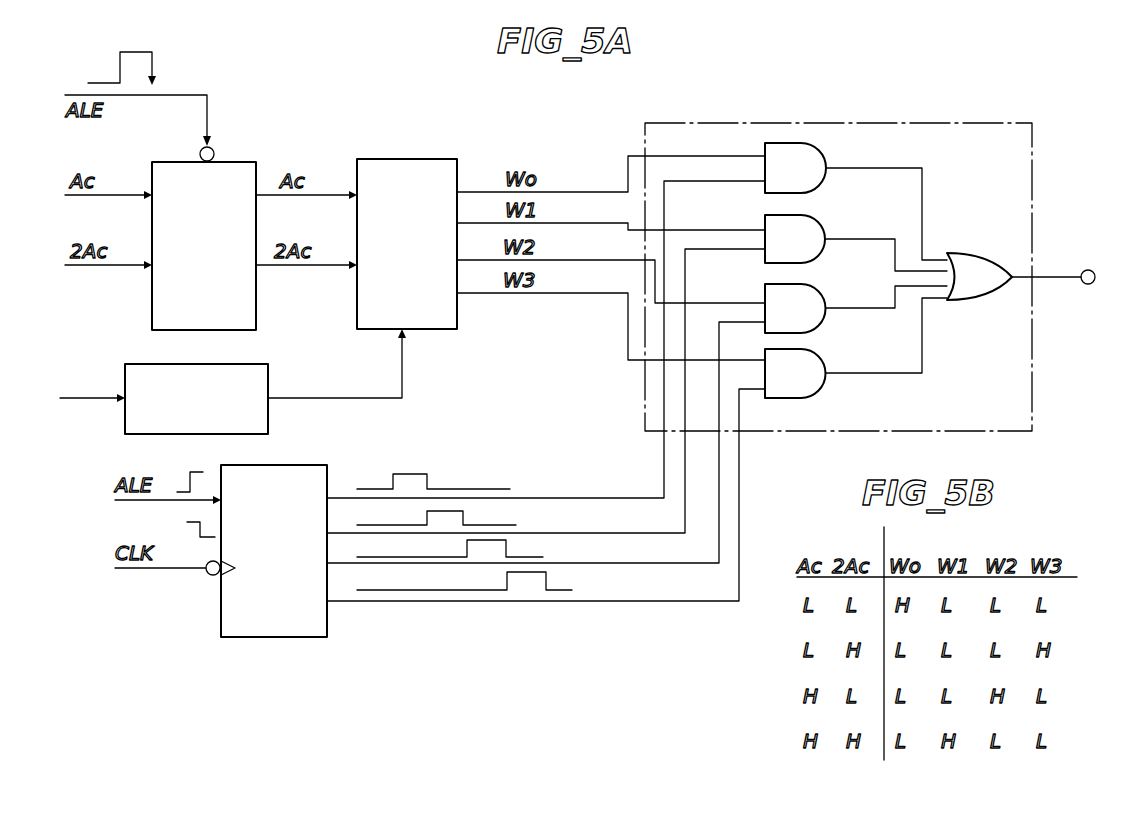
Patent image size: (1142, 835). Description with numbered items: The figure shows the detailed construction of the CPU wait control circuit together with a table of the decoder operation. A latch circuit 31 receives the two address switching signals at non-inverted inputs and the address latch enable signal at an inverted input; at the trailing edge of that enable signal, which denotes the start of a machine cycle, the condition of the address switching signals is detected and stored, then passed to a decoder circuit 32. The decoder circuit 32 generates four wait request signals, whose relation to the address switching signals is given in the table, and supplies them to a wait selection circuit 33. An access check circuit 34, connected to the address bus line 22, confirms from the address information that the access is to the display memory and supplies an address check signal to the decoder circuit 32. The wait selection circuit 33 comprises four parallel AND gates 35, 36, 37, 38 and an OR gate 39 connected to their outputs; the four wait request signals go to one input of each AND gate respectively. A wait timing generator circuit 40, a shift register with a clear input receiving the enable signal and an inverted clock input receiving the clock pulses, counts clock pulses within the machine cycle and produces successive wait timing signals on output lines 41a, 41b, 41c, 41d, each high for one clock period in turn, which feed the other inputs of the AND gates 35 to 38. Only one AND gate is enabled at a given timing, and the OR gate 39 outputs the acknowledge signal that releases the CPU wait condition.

The address bus line 22 is at (77, 397).
The latch circuit 31 is at (243, 162).
The decoder circuit 32 is at (431, 159).
The wait selection circuit 33 is at (787, 123).
The access check circuit 34 is at (270, 370).
The AND gate 35 is at (827, 165).
The AND gate 36 is at (826, 228).
The AND gate 37 is at (828, 300).
The AND gate 38 is at (828, 365).
The OR gate 39 is at (976, 253).
The wait timing generator circuit 40 is at (230, 638).
The output line 41a is at (554, 498).
The output line 41b is at (565, 533).
The output line 41c is at (589, 564).
The output line 41d is at (602, 597).